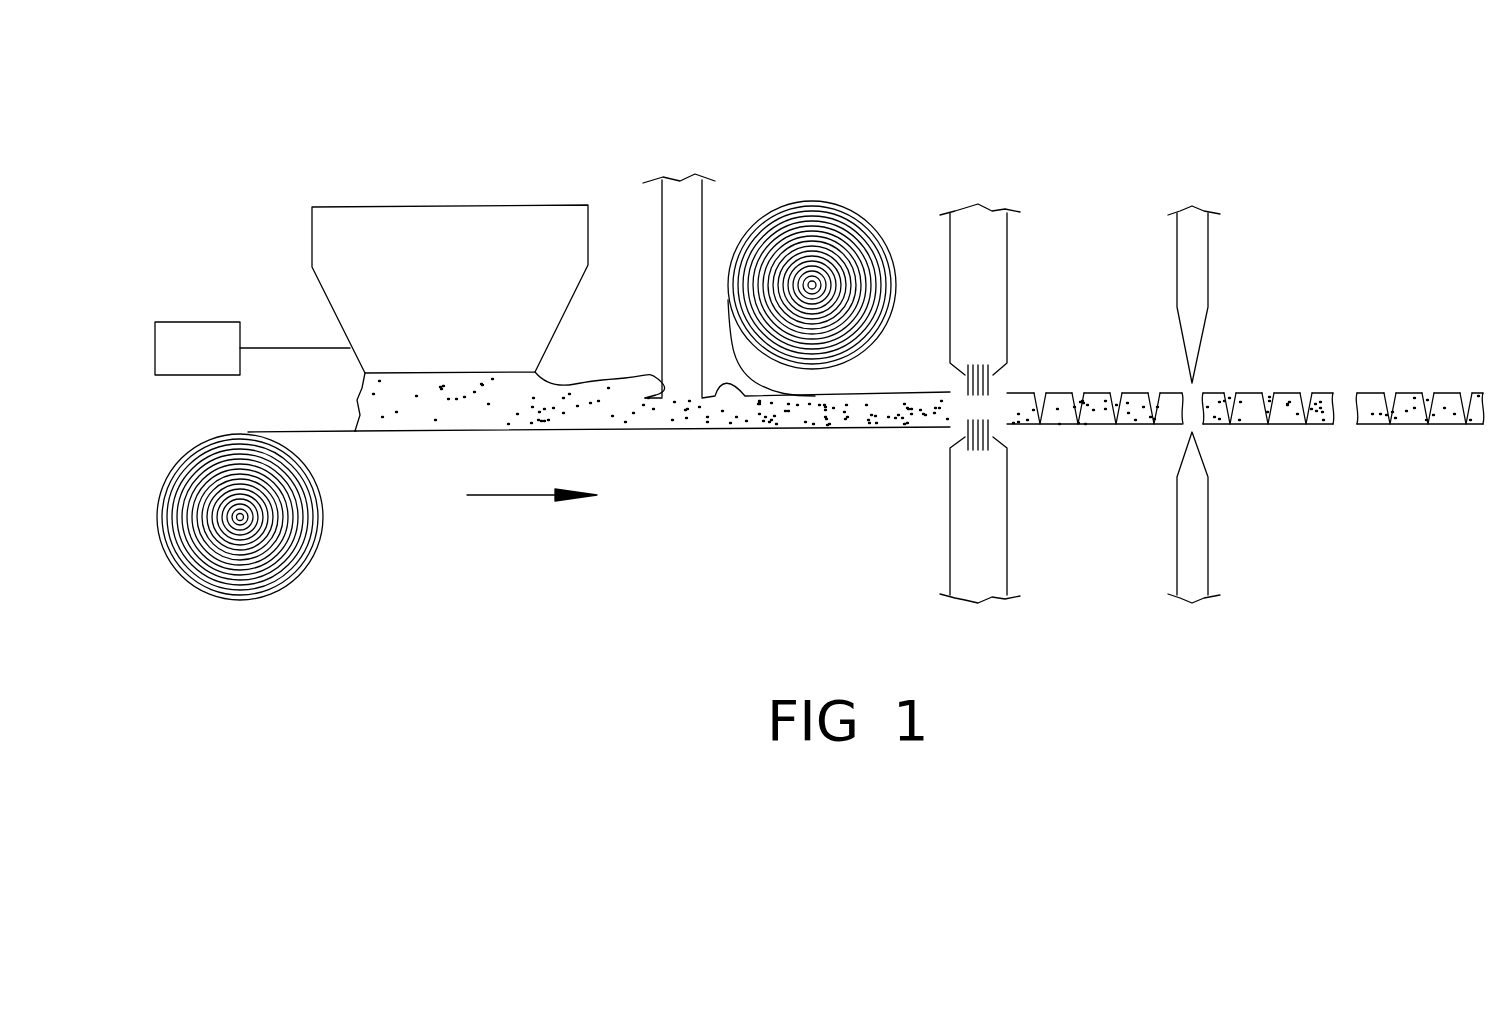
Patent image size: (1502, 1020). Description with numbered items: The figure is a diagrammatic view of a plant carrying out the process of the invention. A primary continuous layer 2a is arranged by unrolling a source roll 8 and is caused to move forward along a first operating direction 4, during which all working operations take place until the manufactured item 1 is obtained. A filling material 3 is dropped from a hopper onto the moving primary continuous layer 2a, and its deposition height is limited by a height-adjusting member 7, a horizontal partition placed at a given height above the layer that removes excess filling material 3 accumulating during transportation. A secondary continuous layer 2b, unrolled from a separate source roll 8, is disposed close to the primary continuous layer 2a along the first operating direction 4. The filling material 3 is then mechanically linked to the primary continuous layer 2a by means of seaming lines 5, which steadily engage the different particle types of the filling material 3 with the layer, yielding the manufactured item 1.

The manufactured item 1 is at (1283, 350).
The primary continuous layer 2a is at (333, 433).
The secondary continuous layer 2b is at (732, 384).
The filling material 3 is at (393, 401).
The first operating direction 4 is at (510, 495).
The seaming lines 5 is at (1113, 399).
The height-adjusting member 7 is at (681, 208).
The source roll 8 is at (245, 520).